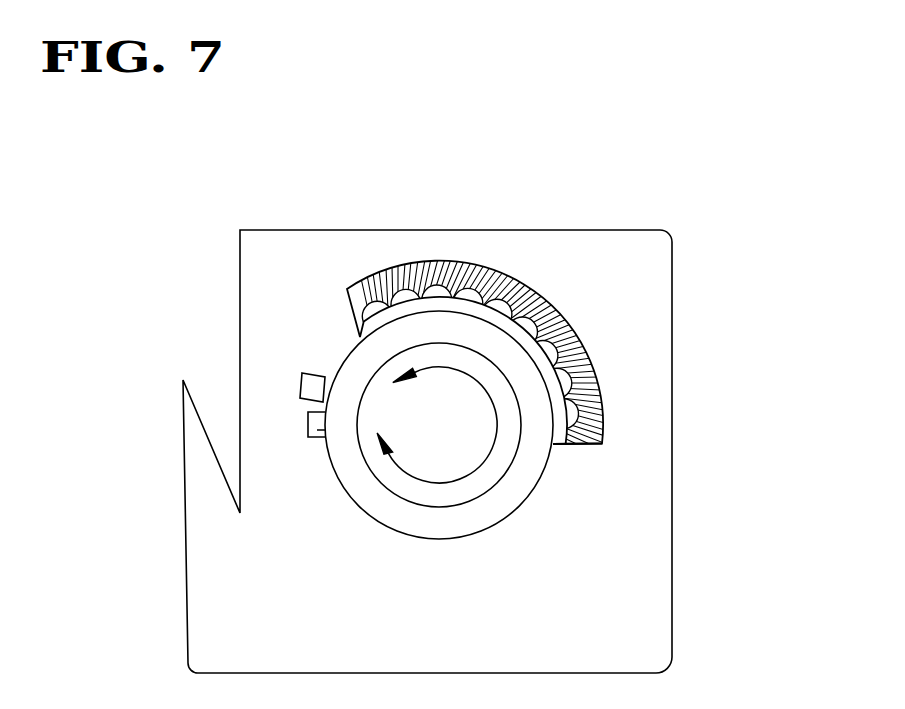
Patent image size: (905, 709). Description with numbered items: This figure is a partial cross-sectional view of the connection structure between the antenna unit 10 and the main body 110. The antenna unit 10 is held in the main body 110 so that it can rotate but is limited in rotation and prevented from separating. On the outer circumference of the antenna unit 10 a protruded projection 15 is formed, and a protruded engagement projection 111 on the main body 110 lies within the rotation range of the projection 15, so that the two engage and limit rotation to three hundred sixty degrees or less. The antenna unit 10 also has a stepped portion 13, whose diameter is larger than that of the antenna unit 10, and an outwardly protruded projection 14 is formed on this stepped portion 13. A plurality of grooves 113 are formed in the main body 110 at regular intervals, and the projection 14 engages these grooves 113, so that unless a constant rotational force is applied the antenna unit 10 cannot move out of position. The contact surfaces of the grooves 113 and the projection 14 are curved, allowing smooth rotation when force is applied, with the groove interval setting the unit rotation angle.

The main body 110 is at (676, 364).
The antenna unit 10 is at (539, 480).
The grooves 113 is at (557, 317).
The projection 14 is at (593, 373).
The stepped portion 13 is at (557, 423).
The engagement projection 111 is at (323, 374).
The projection 15 is at (312, 430).